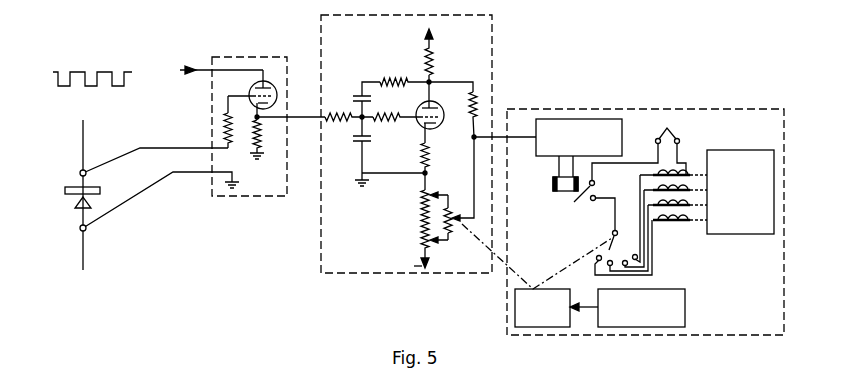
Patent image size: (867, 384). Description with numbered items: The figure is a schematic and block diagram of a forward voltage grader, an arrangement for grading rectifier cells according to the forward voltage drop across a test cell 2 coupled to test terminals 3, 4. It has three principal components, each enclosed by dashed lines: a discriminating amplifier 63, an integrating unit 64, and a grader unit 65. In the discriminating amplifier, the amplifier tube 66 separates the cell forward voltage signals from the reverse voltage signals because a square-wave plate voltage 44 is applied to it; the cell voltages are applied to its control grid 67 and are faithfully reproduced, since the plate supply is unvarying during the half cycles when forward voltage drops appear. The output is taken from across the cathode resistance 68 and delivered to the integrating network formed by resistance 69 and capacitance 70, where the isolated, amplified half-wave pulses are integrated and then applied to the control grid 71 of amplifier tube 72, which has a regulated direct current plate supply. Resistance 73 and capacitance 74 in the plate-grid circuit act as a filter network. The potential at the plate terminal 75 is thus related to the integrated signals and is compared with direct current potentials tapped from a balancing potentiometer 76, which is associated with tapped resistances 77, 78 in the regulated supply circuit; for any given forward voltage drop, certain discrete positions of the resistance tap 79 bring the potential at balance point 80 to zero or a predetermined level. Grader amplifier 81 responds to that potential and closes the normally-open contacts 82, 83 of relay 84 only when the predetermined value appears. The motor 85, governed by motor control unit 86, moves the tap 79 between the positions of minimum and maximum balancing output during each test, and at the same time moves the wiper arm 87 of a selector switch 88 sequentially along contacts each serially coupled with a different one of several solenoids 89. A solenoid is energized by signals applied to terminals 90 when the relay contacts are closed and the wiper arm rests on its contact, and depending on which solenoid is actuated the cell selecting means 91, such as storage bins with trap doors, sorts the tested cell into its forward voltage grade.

The cell 2 is at (75, 199).
The test terminal 3 is at (80, 171).
The test terminal 4 is at (86, 230).
The square-wave plate voltage 44 is at (87, 72).
The discriminating amplifier 63 is at (247, 56).
The integrating unit 64 is at (493, 59).
The grader unit 65 is at (622, 107).
The amplifier tube 66 is at (277, 89).
The control grid 67 is at (250, 94).
The cathode resistance 68 is at (266, 139).
The resistance 69 is at (349, 132).
The capacitance 70 is at (370, 143).
The control grid 71 is at (423, 119).
The amplifier tube 72 is at (438, 105).
The resistance 73 is at (386, 78).
The capacitance 74 is at (358, 93).
The plate terminal 75 is at (432, 81).
The balancing potentiometer 76 is at (453, 213).
The tapped resistance 77 is at (424, 199).
The tapped resistance 78 is at (424, 240).
The resistance tap 79 is at (462, 232).
The balance point 80 is at (476, 136).
The grader amplifier 81 is at (623, 133).
The normally-open contact 82 is at (603, 180).
The normally-open contact 83 is at (601, 213).
The relay 84 is at (553, 187).
The motor 85 is at (515, 315).
The motor control unit 86 is at (686, 308).
The wiper arm 87 is at (611, 235).
The selector switch 88 is at (573, 256).
The solenoids 89 is at (693, 158).
The terminals 90 is at (669, 128).
The cell selecting means 91 is at (742, 150).